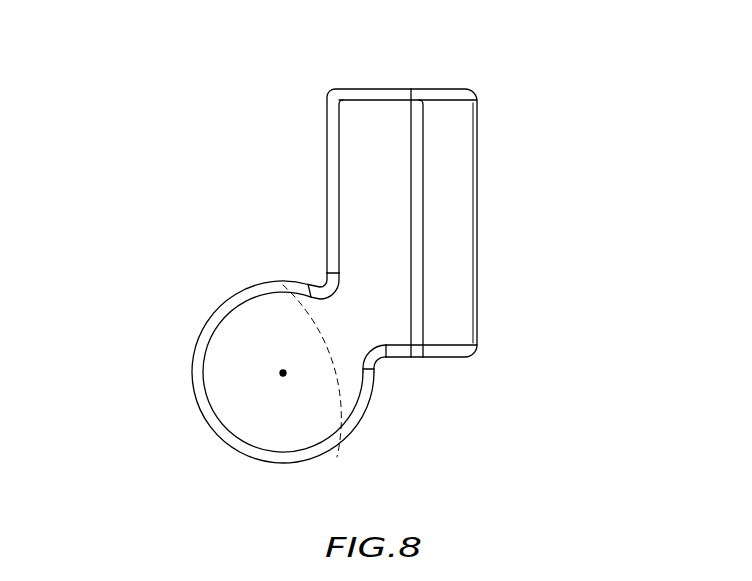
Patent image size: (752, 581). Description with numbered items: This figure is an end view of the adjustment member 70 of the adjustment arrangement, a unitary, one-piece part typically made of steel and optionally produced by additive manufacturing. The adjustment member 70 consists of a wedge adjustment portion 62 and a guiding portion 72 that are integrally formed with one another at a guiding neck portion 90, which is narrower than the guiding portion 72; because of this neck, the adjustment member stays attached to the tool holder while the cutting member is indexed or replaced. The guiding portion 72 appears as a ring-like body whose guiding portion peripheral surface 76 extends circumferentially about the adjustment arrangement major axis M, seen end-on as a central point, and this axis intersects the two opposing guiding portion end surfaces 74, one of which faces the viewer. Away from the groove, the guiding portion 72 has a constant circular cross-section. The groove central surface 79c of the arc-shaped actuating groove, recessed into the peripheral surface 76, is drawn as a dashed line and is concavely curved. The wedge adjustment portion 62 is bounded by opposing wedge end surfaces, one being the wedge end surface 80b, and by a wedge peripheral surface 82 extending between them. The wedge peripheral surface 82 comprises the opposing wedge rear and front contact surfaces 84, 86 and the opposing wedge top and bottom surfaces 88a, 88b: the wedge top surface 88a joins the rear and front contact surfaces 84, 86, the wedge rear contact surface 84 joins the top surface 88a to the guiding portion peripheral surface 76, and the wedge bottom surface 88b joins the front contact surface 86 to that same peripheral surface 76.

The adjustment member 70 is at (117, 167).
The wedge adjustment portion 62 is at (492, 177).
The guiding portion 72 is at (368, 435).
The guiding portion end surfaces 74 is at (225, 357).
The guiding portion peripheral surface 76 is at (233, 295).
The groove central surface 79c is at (340, 378).
The adjustment arrangement major axis M is at (283, 373).
The wedge end surface 80b is at (367, 143).
The wedge peripheral surface 82 is at (452, 127).
The wedge rear contact surface 84 is at (327, 153).
The wedge front contact surface 86 is at (458, 158).
The wedge top surface 88a is at (401, 89).
The wedge bottom surface 88b is at (437, 358).
The guiding neck portion 90 is at (317, 280).